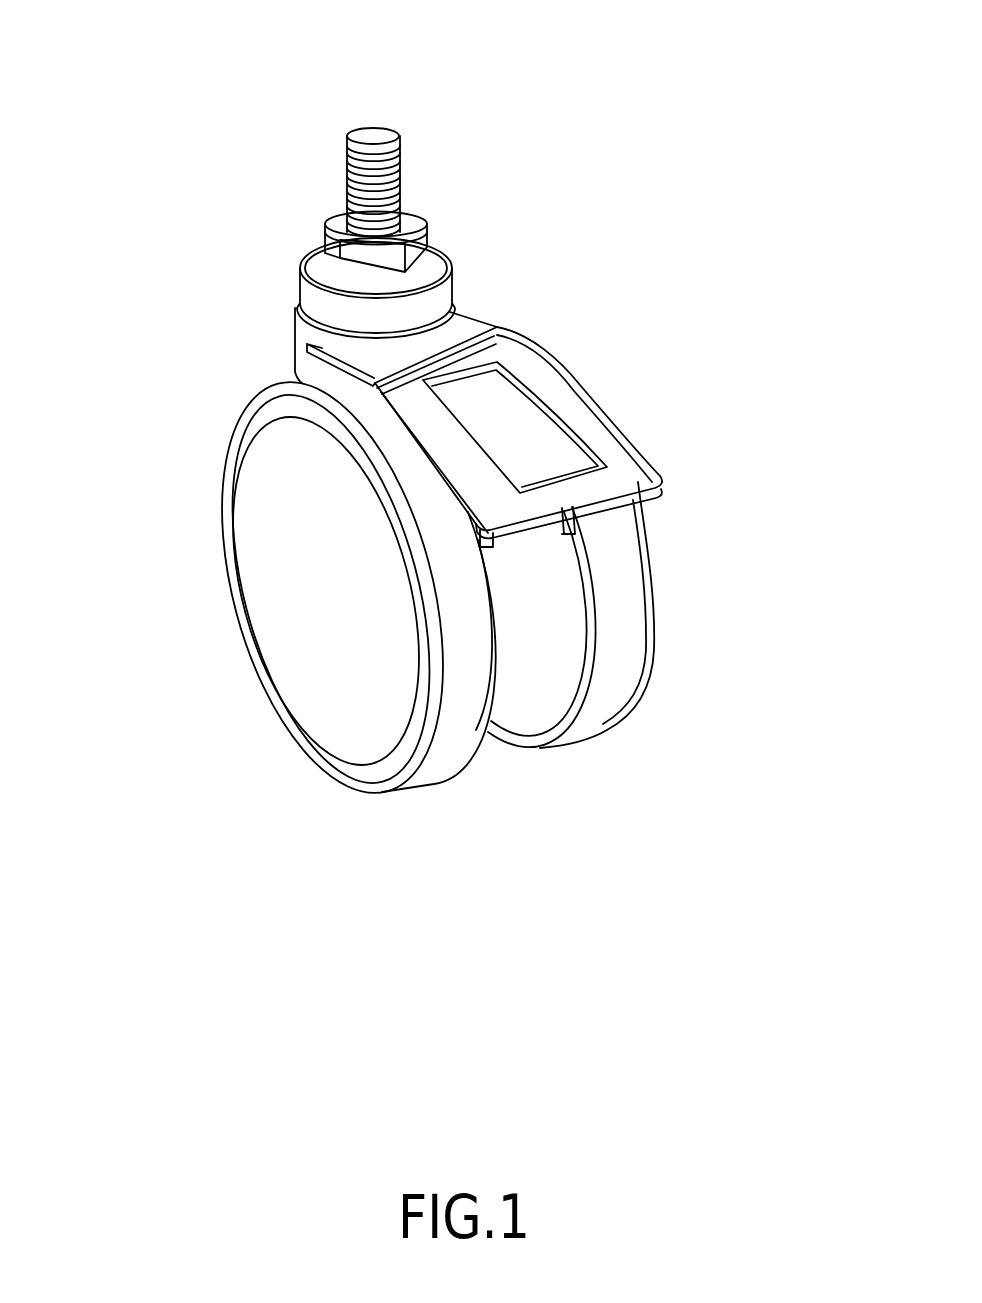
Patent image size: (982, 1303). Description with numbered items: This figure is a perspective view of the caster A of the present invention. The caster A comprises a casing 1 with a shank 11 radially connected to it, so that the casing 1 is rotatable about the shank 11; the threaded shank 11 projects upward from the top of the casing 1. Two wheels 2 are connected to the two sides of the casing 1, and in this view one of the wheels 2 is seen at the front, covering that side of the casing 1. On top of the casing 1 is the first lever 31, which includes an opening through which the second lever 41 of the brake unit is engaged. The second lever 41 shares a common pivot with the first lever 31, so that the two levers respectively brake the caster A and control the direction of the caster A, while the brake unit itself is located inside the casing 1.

The caster A is at (607, 88).
The casing 1 is at (540, 618).
The shank 11 is at (373, 133).
The wheels 2 is at (272, 548).
The first lever 31 is at (632, 470).
The second lever 41 is at (497, 411).